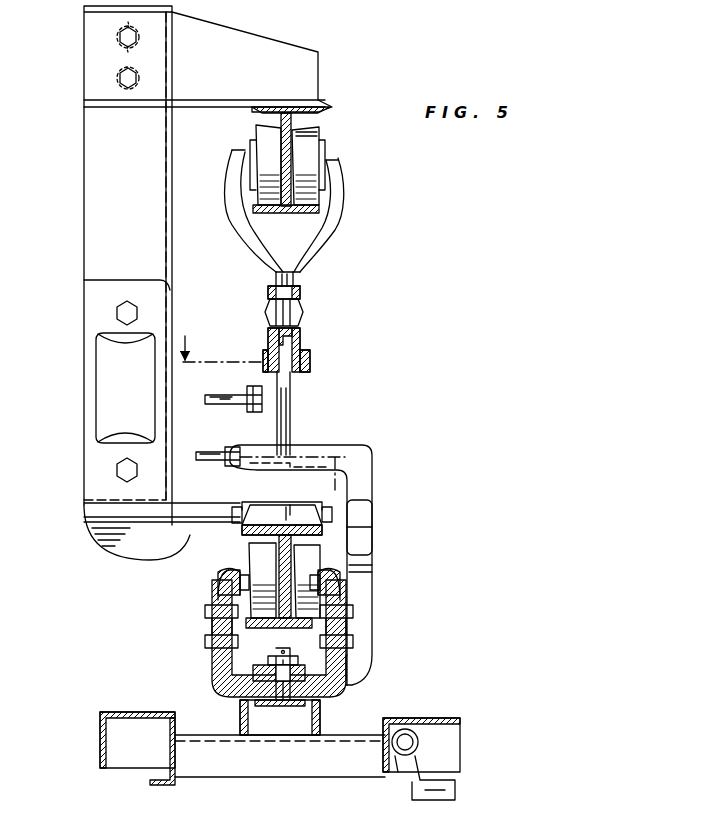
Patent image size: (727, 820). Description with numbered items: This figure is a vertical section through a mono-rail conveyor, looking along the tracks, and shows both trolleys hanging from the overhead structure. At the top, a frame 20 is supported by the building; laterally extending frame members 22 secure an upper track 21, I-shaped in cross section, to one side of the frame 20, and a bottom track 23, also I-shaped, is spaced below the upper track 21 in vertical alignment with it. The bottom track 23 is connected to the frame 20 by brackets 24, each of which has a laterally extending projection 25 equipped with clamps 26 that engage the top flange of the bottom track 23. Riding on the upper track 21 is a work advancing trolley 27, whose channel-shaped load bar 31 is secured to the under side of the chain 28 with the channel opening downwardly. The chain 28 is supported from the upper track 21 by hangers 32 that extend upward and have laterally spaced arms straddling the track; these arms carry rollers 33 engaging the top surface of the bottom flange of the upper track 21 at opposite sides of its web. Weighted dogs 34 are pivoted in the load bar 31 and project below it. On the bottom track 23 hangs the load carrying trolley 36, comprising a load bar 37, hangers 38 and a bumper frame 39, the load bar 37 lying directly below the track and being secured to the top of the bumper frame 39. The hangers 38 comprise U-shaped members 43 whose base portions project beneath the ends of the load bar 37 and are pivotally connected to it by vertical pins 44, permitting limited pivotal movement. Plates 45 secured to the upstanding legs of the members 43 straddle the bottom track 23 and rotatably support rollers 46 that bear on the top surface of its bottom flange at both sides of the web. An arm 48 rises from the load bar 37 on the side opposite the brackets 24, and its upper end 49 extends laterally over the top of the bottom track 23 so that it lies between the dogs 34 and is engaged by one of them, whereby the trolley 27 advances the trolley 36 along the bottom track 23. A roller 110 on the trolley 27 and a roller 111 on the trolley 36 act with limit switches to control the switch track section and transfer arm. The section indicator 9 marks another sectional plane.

The frame 20 is at (84, 55).
The laterally extending frame members 22 is at (307, 73).
The upper track 21 is at (292, 130).
The rollers 33 is at (308, 165).
The hangers 32 is at (342, 240).
The work advancing trolley 27 is at (326, 256).
The chain 28 is at (306, 320).
The load bar 31 is at (300, 360).
The section line 9 is at (220, 337).
The dogs 34 is at (290, 433).
The roller 110 is at (197, 397).
The roller 111 is at (197, 455).
The upper end of the arm 49 is at (322, 446).
The load carrying trolley 36 is at (375, 575).
The arm 48 is at (372, 524).
The clamps 26 is at (252, 507).
The brackets 24 is at (86, 478).
The laterally extending projection 25 is at (212, 535).
The rollers 46 is at (251, 556).
The bottom track 23 is at (282, 628).
The plates 45 is at (208, 620).
The U-shaped members 43 is at (340, 690).
The load bar 37 is at (250, 672).
The hangers 38 is at (346, 697).
The vertical pins 44 is at (272, 714).
The bumper frame 39 is at (330, 762).